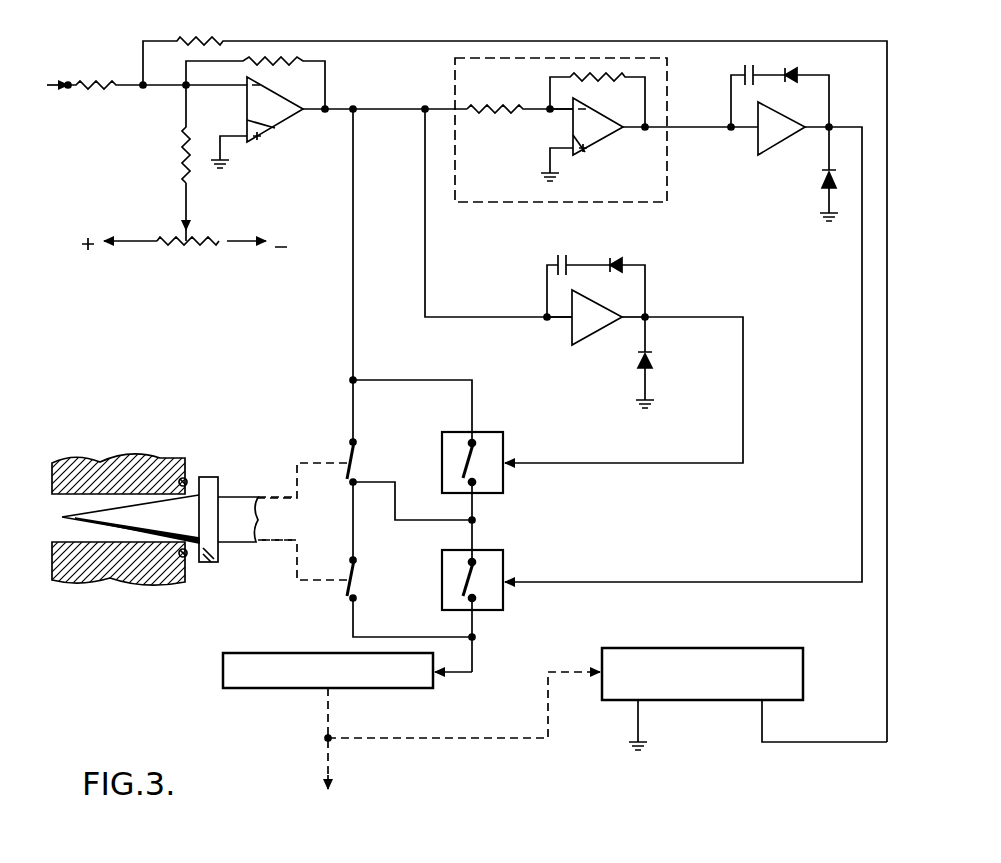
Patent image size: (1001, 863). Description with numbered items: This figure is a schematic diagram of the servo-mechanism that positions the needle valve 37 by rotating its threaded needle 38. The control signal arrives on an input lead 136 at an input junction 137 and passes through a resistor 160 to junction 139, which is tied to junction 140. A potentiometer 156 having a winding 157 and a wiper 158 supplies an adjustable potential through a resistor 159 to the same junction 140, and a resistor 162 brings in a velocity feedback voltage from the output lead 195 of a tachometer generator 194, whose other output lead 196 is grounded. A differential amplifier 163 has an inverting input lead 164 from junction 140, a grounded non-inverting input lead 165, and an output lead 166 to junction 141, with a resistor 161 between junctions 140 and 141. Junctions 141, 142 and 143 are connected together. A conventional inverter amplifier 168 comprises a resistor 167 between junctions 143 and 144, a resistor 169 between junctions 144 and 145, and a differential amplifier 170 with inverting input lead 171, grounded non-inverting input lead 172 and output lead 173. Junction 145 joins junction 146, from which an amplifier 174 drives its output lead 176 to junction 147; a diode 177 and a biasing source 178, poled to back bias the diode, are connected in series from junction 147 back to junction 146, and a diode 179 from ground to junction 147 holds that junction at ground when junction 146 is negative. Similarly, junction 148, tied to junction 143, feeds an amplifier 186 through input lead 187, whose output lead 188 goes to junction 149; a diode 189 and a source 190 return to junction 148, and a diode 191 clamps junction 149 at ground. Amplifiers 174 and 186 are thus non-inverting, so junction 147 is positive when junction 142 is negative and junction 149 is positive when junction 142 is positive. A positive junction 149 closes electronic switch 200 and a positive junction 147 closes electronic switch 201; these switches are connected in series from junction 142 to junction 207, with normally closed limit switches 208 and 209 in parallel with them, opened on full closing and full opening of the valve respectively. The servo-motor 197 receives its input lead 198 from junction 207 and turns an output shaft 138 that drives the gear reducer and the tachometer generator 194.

The input lead 136 is at (60, 82).
The input junction 137 is at (68, 88).
The resistor 160 is at (96, 82).
The junction 139 is at (144, 88).
The resistor 162 is at (198, 40).
The inverting input lead 164 is at (241, 84).
The junction 140 is at (188, 88).
The resistor 161 is at (273, 60).
The output lead 166 is at (319, 106).
The junction 141 is at (327, 107).
The differential amplifier 163 is at (280, 130).
The non-inverting input lead 165 is at (238, 138).
The resistor 159 is at (183, 141).
The wiper 158 is at (184, 199).
The potentiometer 156 is at (216, 228).
The winding 157 is at (186, 245).
The junction 142 is at (410, 95).
The junction 143 is at (423, 112).
The inverter amplifier 168 is at (452, 70).
The resistor 167 is at (494, 84).
The junction 144 is at (549, 107).
The resistor 169 is at (600, 78).
The inverting input lead 171 is at (565, 113).
The non-inverting input lead 172 is at (552, 149).
The output lead 173 is at (617, 132).
The differential amplifier 170 is at (587, 155).
The junction 145 is at (666, 122).
The junction 146 is at (730, 130).
The biasing source of potential 178 is at (746, 66).
The diode 177 is at (800, 68).
The amplifier 174 is at (796, 104).
The output lead 176 is at (807, 132).
The junction 147 is at (831, 126).
The diode 179 is at (822, 178).
The junction 148 is at (545, 315).
The source of biasing potential 190 is at (560, 256).
The diode 189 is at (623, 251).
The amplifier 186 is at (620, 291).
The input lead 187 is at (565, 320).
The output lead 188 is at (631, 322).
The junction 149 is at (649, 316).
The diode 191 is at (657, 356).
The limit switch 208 is at (349, 447).
The limit switch 209 is at (346, 592).
The electronic switch 200 is at (505, 437).
The electronic switch 201 is at (504, 553).
The junction 207 is at (477, 637).
The needle valve 37 is at (212, 456).
The threaded needle 38 is at (238, 530).
The servo-motor 197 is at (221, 672).
The input lead 198 is at (452, 677).
The output shaft 138 is at (324, 752).
The tachometer generator 194 is at (757, 645).
The output lead 196 is at (642, 726).
The output lead 195 is at (765, 720).